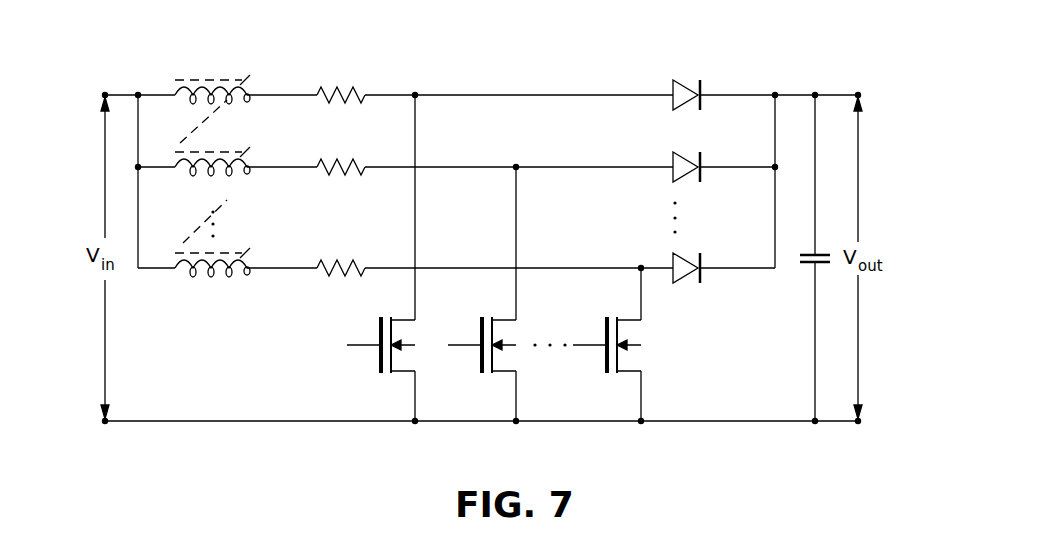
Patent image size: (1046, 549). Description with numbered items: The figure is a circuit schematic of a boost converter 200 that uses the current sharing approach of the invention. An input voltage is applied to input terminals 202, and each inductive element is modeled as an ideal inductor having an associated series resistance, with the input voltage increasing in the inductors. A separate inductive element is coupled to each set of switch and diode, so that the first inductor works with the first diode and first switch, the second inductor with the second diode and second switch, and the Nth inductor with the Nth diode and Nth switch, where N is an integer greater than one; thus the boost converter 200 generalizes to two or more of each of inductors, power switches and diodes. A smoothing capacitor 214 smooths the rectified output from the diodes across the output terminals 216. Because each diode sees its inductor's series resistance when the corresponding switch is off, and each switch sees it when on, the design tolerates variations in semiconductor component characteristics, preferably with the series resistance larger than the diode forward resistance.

The boost converter 200 is at (513, 72).
The input terminals 202 is at (105, 95).
The output terminals 216 is at (858, 95).
The smoothing capacitor 214 is at (807, 262).